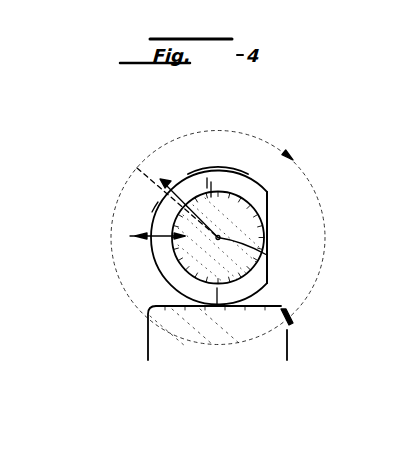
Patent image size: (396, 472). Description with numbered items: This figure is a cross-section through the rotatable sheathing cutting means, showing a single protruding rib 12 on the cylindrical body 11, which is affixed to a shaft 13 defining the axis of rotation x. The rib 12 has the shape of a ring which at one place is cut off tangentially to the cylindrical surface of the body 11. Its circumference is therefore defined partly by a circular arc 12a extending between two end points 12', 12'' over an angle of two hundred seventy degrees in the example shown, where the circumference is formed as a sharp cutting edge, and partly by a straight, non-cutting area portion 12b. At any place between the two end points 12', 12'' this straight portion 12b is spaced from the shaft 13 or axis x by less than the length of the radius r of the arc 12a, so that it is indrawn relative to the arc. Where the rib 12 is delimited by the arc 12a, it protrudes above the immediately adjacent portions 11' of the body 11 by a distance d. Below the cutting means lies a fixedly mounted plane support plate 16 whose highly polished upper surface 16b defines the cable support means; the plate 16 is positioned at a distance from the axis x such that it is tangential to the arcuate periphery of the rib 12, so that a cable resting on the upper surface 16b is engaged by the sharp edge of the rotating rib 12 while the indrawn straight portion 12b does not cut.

The cylindrical body 11 is at (247, 238).
The immediately adjacent portions of the body 11' is at (125, 202).
The protruding rib 12 is at (179, 238).
The circular arc 12a is at (235, 172).
The straight non-cutting area portion 12b is at (268, 213).
The end point 12' is at (298, 183).
The end point 12'' is at (301, 286).
The shaft 13 is at (137, 168).
The support plate 16 is at (159, 334).
The upper surface 16b is at (157, 304).
The distance d is at (134, 238).
The radius r is at (184, 190).
The axis of rotation x is at (268, 253).